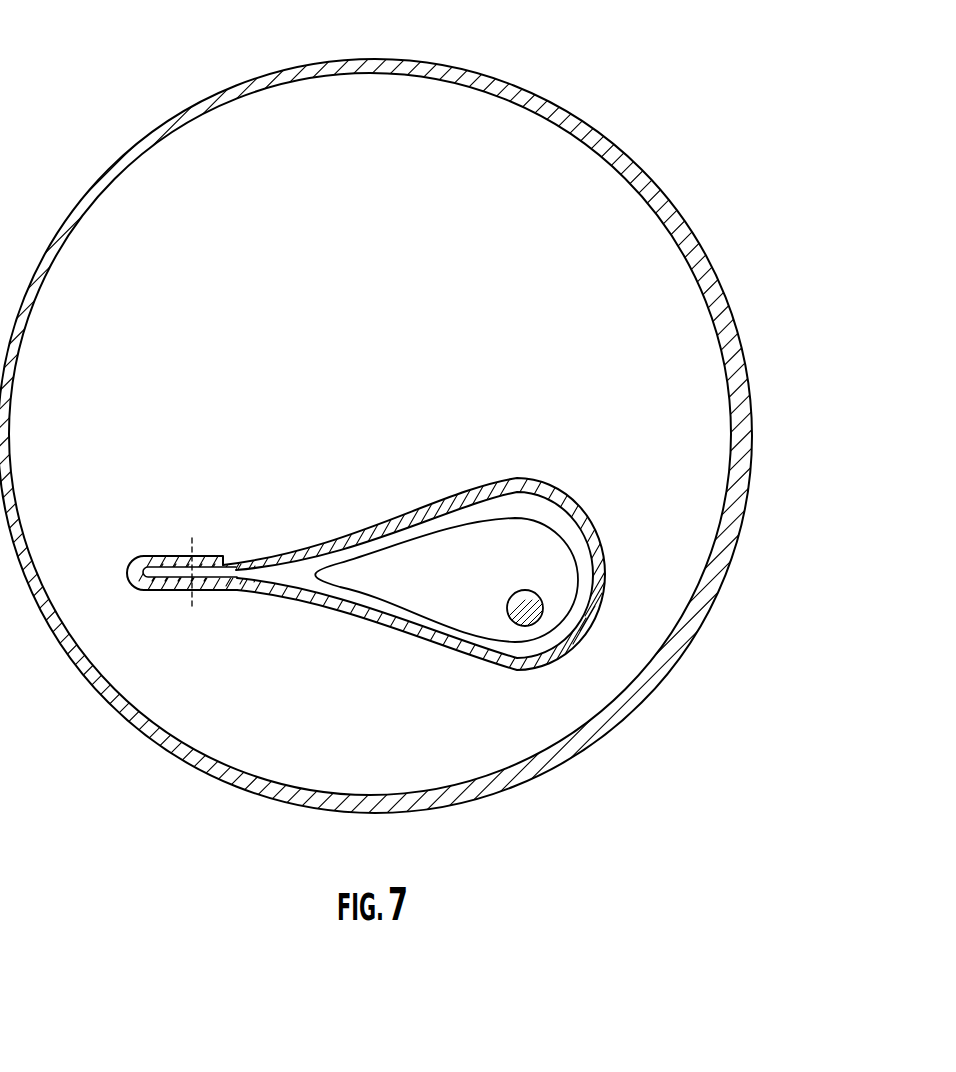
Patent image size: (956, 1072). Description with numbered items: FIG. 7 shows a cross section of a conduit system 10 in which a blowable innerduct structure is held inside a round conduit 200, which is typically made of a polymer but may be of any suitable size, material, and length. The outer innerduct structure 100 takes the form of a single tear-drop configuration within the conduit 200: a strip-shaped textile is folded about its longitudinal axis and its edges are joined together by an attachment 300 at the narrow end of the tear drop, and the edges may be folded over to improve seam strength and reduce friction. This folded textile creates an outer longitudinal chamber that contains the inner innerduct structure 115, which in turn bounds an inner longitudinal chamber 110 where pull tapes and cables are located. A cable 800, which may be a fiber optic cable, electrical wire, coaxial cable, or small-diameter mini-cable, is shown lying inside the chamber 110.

The conduit system 10 is at (76, 101).
The outer innerduct structure 100 is at (512, 477).
The inner longitudinal chamber 110 is at (518, 575).
The inner innerduct structure 115 is at (577, 566).
The conduit 200 is at (526, 86).
The attachment 300 is at (192, 550).
The cable 800 is at (504, 620).